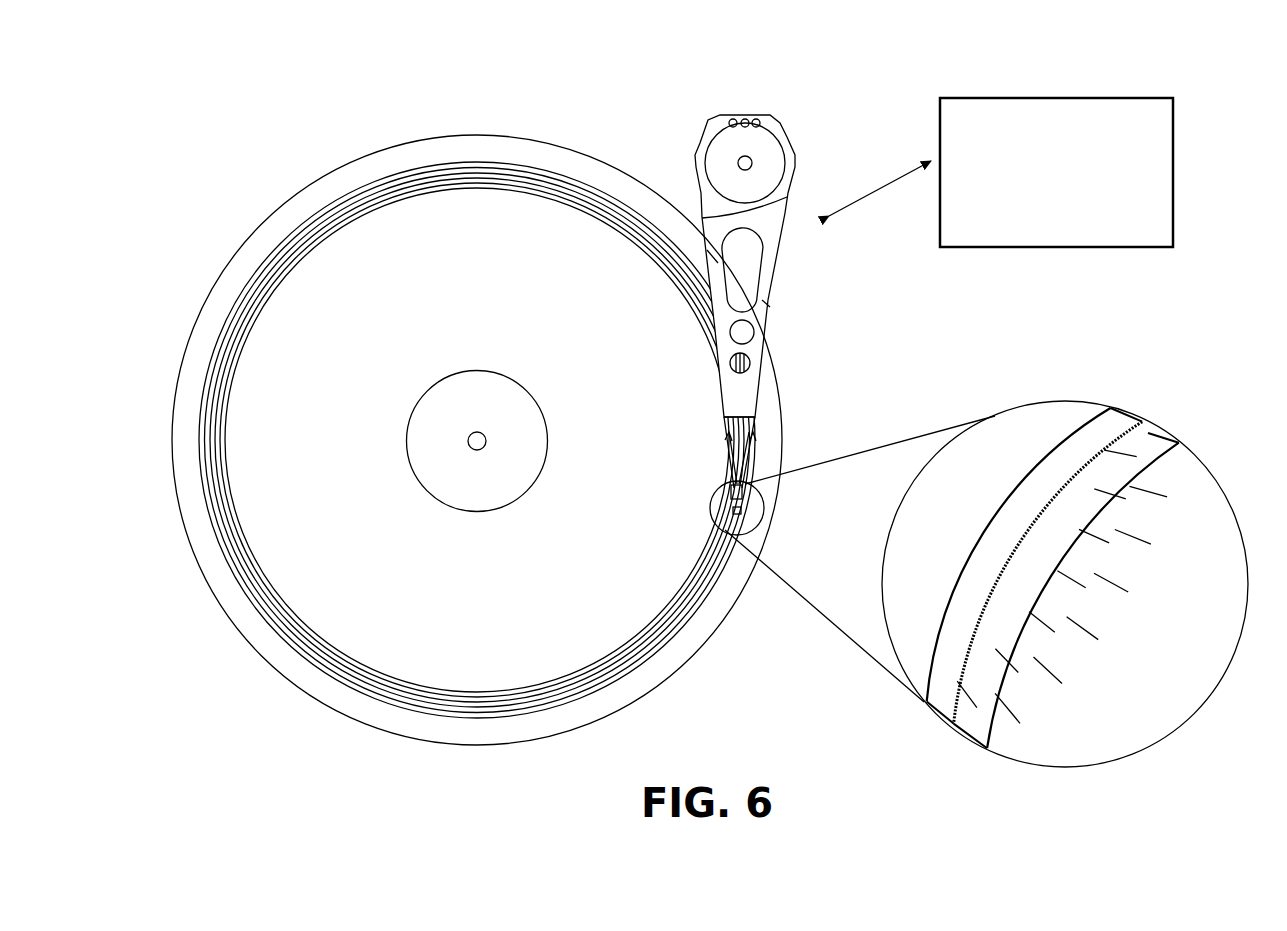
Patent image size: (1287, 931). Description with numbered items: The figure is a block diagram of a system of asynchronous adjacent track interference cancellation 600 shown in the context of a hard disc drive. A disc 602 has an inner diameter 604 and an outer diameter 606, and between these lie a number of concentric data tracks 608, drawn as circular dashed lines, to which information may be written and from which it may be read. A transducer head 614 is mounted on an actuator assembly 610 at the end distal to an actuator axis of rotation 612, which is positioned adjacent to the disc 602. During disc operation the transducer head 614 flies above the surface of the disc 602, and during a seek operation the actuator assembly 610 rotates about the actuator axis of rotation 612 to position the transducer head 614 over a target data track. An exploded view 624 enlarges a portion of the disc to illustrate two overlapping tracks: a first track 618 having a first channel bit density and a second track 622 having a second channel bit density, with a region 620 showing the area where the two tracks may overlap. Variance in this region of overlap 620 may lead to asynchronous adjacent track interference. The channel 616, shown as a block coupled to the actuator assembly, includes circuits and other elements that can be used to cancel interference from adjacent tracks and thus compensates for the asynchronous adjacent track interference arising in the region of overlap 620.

The system of asynchronous interference cancellation 600 is at (240, 115).
The disc 602 is at (546, 142).
The inner diameter 604 is at (447, 377).
The outer diameter 606 is at (365, 183).
The data tracks 608 is at (322, 653).
The actuator assembly 610 is at (785, 232).
The actuator axis of rotation 612 is at (751, 158).
The transducer head 614 is at (750, 505).
The channel 616 is at (1001, 172).
The first track 618 is at (929, 718).
The region of overlap 620 is at (951, 735).
The second track 622 is at (978, 749).
The exploded view 624 is at (1143, 750).